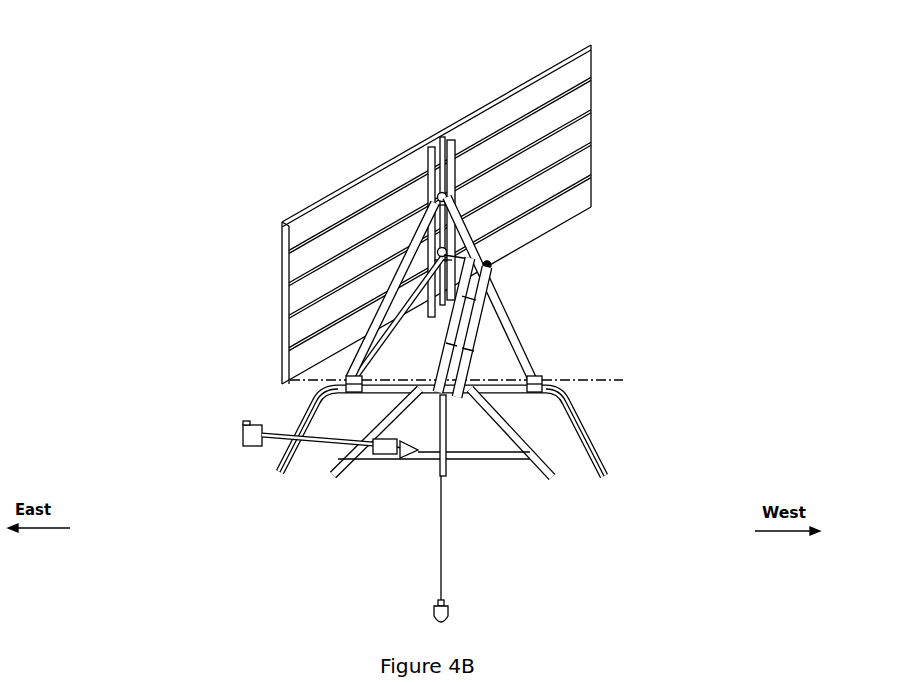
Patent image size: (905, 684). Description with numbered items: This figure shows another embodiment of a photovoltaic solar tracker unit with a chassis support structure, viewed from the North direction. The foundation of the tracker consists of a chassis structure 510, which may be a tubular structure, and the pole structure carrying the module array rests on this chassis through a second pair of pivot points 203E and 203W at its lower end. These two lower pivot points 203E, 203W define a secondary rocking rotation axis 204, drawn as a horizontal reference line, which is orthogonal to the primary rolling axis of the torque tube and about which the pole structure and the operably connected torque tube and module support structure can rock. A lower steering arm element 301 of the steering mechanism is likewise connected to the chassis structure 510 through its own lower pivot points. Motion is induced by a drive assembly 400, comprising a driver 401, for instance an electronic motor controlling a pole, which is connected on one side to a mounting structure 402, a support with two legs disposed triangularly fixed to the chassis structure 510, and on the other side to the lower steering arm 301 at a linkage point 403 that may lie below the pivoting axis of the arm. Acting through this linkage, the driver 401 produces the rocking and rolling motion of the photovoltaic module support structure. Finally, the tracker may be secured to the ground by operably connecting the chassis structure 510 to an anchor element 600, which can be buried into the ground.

The lower pivot point 203E is at (343, 385).
The lower pivot point 203W is at (540, 377).
The secondary rotation axis 204 is at (635, 382).
The lower steering arm element 301 is at (470, 323).
The drive assembly 400 is at (340, 436).
The driver 401 is at (243, 434).
The mounting structure 402 is at (372, 449).
The linkage point 403 is at (522, 450).
The chassis structure 510 is at (587, 425).
The anchor element 600 is at (450, 607).